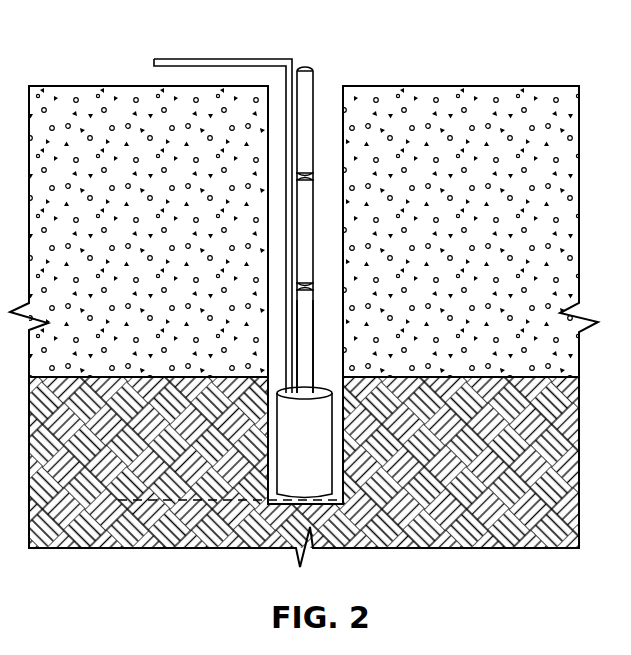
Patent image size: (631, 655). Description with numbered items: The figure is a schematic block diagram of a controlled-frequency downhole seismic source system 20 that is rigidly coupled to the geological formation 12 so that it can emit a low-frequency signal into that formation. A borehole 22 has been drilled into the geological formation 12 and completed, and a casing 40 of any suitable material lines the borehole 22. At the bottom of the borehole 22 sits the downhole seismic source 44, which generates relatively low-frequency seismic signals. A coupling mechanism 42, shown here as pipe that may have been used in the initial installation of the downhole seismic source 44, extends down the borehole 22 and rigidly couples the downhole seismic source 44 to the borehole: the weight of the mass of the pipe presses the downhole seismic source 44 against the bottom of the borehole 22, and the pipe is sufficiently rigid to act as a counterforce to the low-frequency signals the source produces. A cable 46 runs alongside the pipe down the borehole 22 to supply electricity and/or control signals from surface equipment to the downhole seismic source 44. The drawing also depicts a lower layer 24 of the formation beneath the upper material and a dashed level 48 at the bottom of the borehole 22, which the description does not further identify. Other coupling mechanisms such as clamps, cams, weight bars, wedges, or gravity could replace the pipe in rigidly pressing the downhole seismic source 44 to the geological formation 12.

The controlled-frequency downhole seismic source system 20 is at (139, 48).
The geological formation 12 is at (252, 255).
The borehole 22 is at (322, 87).
The lower formation layer 24 is at (210, 376).
The casing 40 is at (343, 158).
The coupling mechanism 42 is at (313, 335).
The downhole seismic source 44 is at (320, 447).
The cable 46 is at (236, 67).
The borehole bottom level 48 is at (118, 500).